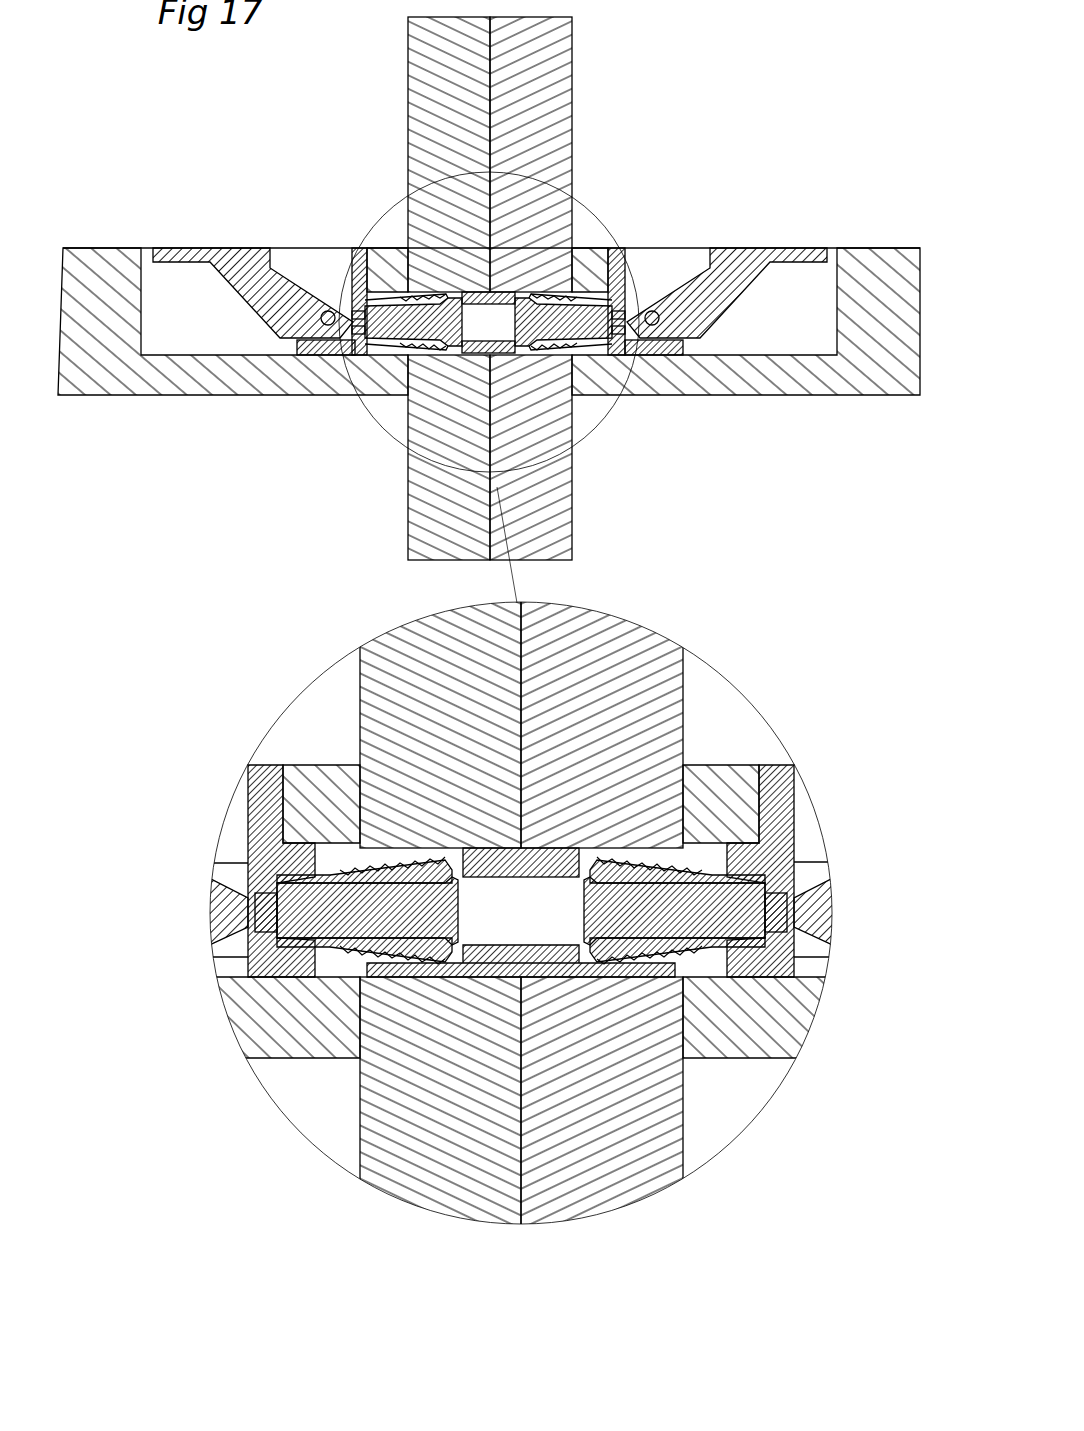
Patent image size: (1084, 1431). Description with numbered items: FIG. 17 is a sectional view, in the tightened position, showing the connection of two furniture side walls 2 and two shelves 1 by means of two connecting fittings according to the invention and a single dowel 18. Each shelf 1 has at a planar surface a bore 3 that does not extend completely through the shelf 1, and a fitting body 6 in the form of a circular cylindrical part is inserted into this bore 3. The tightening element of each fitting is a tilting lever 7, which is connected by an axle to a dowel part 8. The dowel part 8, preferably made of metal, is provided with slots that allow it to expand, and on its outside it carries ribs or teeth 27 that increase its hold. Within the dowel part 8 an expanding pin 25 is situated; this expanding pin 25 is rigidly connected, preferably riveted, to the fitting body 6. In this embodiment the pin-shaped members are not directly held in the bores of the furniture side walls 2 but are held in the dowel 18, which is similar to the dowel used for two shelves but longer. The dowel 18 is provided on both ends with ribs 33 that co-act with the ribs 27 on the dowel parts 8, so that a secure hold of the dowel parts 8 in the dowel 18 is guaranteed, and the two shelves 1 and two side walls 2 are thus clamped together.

The shelf 1 is at (886, 238).
The furniture side wall 2 is at (533, 80).
The bore 3 is at (772, 330).
The fitting body 6 is at (660, 277).
The tilting lever 7 is at (753, 268).
The dowel part 8 is at (333, 873).
The dowel 18 is at (497, 293).
The expanding pin 25 is at (362, 908).
The ribs or teeth 27 is at (598, 858).
The ribs 33 is at (410, 975).